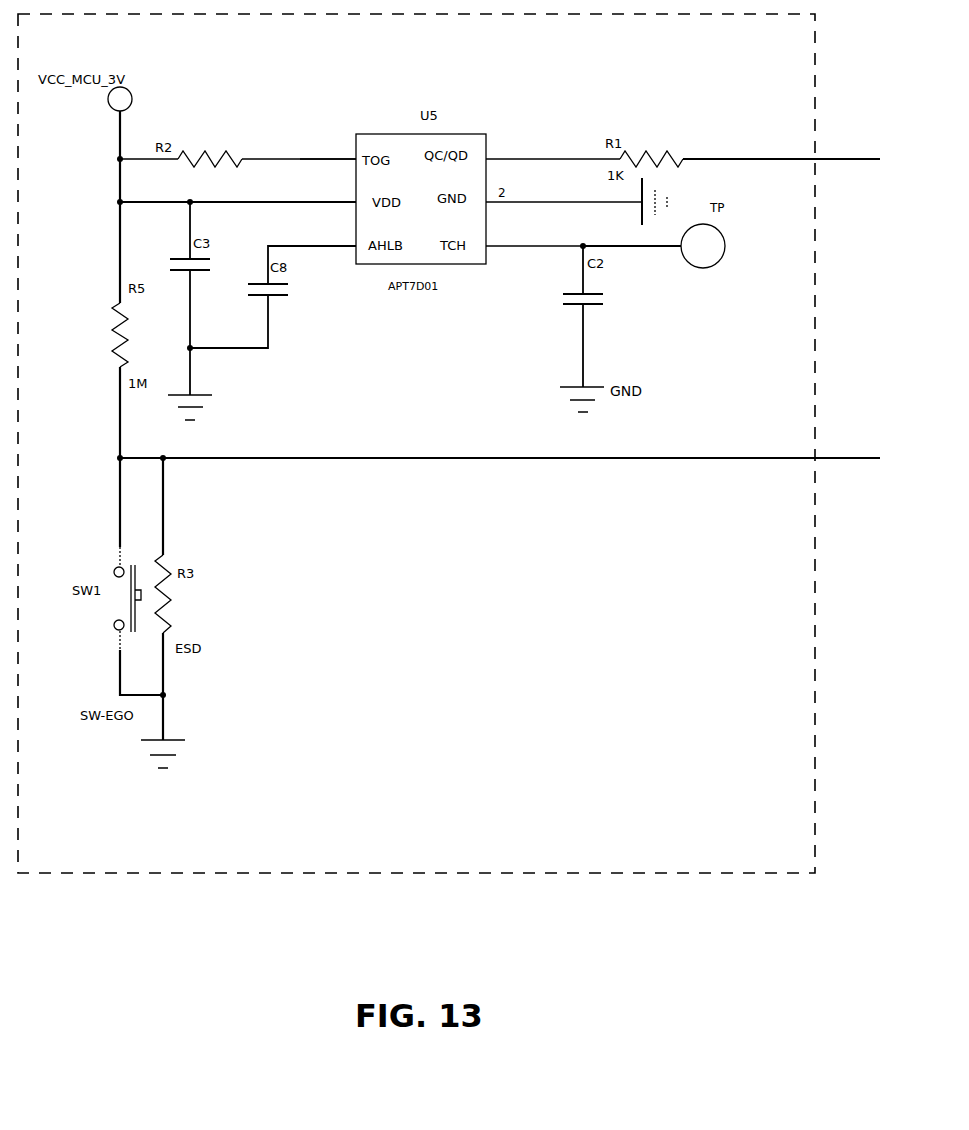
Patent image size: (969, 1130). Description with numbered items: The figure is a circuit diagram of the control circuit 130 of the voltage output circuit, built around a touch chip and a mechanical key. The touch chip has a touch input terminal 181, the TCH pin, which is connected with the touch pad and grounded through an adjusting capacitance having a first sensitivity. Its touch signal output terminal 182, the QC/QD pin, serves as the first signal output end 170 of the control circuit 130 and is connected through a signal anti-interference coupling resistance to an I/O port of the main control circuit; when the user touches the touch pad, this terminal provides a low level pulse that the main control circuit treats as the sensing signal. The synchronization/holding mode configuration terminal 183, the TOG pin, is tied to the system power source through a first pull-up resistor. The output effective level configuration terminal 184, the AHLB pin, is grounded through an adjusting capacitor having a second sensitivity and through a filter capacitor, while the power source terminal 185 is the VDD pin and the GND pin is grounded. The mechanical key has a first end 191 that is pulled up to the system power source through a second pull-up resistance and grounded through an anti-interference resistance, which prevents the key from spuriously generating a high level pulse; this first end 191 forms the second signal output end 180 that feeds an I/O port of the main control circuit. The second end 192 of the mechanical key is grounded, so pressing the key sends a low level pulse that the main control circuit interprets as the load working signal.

The control circuit 130 is at (815, 128).
The first signal output end 170 is at (781, 150).
The second signal output end 180 is at (500, 448).
The touch input terminal 181 is at (534, 240).
The touch signal output terminal 182 is at (553, 151).
The synchronization/holding mode configuration terminal 183 is at (328, 151).
The output effective level configuration terminal 184 is at (328, 238).
The power source terminal 185 is at (328, 194).
The first end of the mechanical key 191 is at (109, 554).
The second end of the mechanical key 192 is at (108, 641).